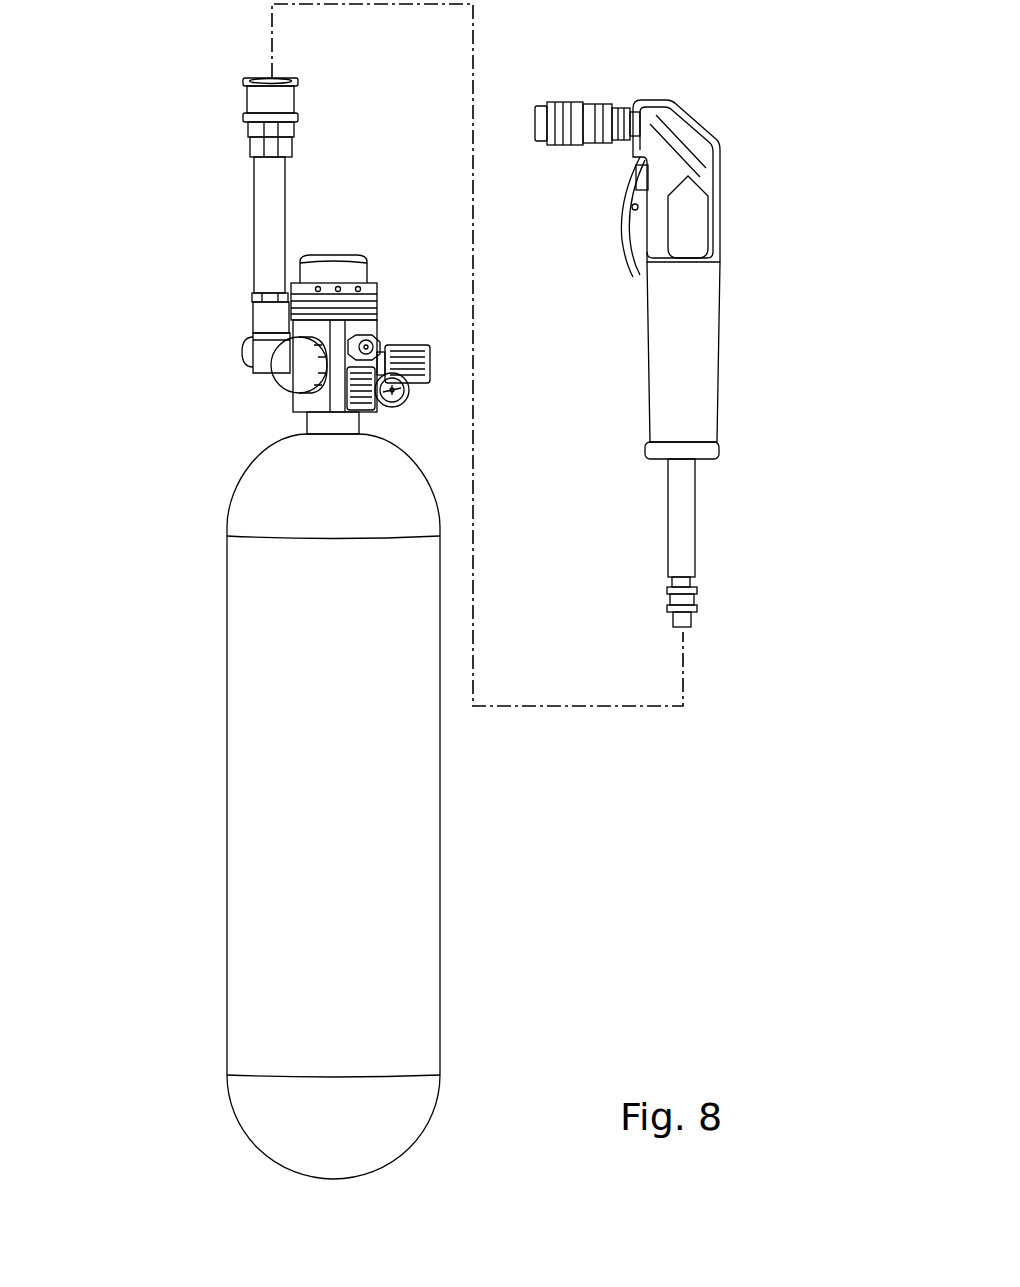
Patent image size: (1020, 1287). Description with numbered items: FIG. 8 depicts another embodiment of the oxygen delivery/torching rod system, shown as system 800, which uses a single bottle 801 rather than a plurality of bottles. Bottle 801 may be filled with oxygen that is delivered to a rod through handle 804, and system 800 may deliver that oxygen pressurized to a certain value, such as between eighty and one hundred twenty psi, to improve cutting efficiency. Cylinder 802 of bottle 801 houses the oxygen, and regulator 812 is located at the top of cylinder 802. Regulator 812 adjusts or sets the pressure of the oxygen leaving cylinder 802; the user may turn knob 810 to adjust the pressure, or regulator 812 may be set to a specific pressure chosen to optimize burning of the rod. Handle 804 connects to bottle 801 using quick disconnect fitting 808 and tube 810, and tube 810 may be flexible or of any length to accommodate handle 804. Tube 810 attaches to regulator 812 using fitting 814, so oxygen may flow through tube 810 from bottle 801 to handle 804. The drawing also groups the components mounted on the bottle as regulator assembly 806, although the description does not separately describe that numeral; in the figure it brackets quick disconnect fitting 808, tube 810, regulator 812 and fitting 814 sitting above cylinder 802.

The system 800 is at (585, 735).
The bottle 801 is at (340, 795).
The cylinder 802 is at (440, 845).
The handle 804 is at (720, 297).
The regulator assembly 806 is at (188, 73).
The quick disconnect fitting 808 is at (298, 107).
The tube 810 is at (285, 187).
The regulator 812 is at (373, 285).
The fitting 814 is at (243, 356).